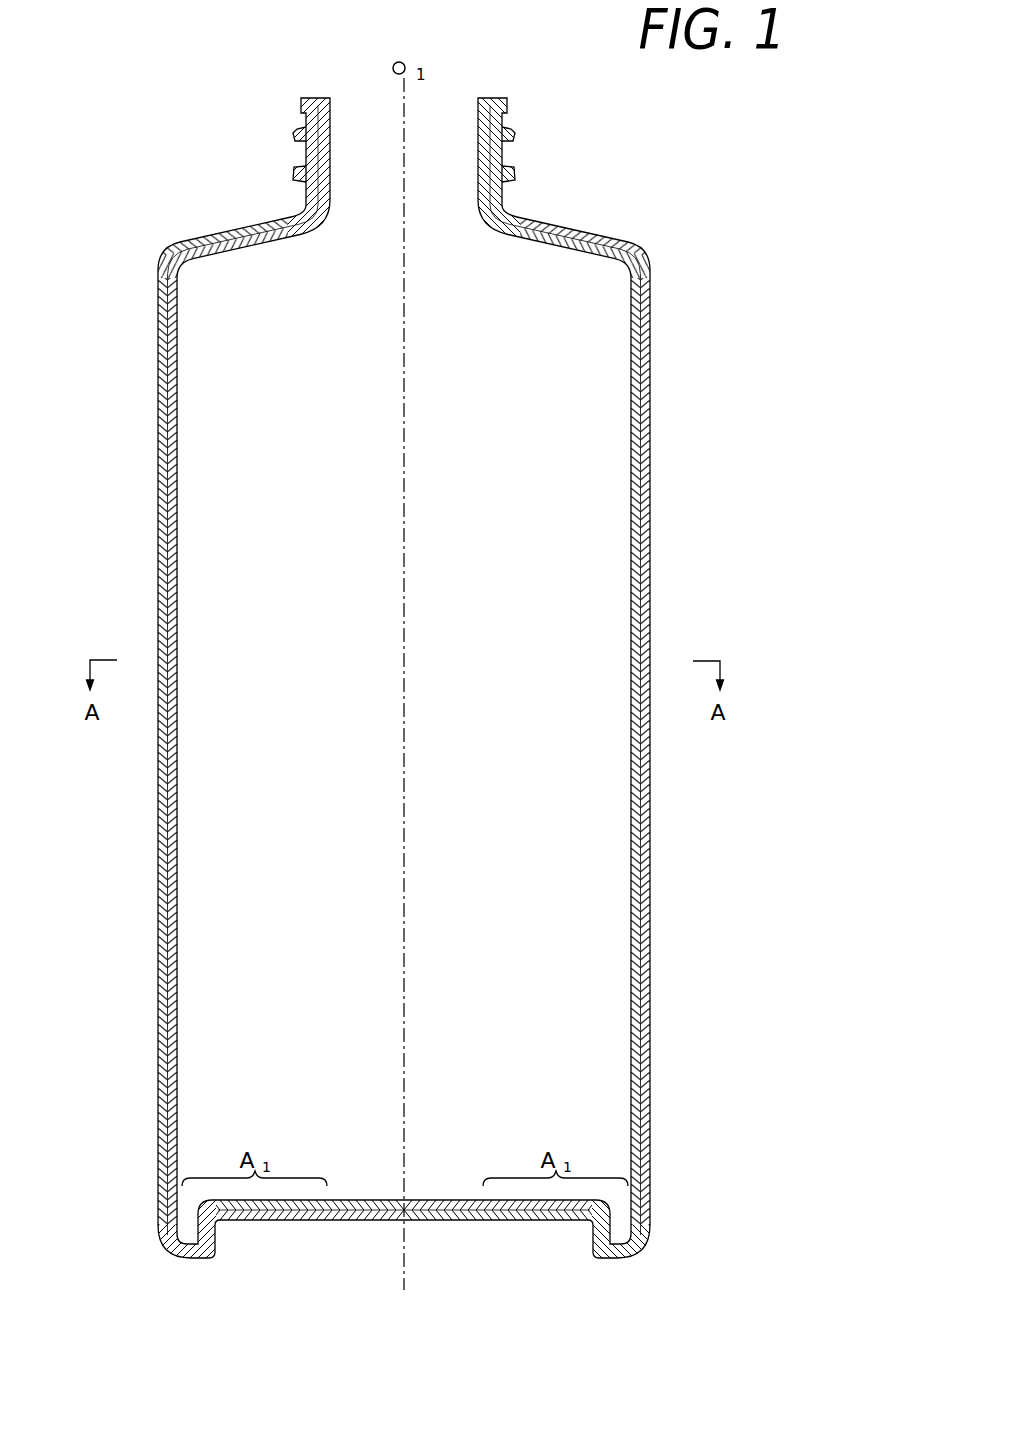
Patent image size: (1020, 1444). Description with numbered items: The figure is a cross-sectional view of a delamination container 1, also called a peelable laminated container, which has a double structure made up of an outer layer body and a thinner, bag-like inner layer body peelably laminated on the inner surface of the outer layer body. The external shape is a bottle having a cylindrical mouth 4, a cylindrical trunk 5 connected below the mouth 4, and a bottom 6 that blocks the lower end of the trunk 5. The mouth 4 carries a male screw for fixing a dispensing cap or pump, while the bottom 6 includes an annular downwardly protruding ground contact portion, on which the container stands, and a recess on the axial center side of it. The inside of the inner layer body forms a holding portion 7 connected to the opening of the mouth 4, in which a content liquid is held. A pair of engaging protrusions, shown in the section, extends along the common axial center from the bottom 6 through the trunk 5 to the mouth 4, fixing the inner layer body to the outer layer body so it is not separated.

The delamination container 1 is at (627, 182).
The mouth 4 is at (435, 164).
The trunk 5 is at (440, 717).
The bottom 6 is at (404, 1258).
The holding portion 7 is at (463, 918).